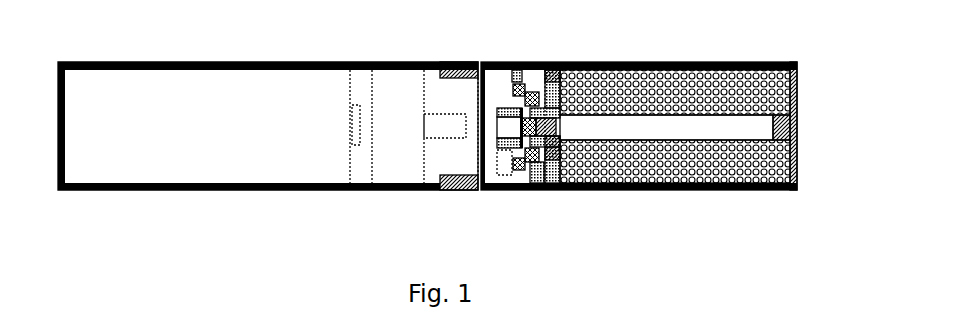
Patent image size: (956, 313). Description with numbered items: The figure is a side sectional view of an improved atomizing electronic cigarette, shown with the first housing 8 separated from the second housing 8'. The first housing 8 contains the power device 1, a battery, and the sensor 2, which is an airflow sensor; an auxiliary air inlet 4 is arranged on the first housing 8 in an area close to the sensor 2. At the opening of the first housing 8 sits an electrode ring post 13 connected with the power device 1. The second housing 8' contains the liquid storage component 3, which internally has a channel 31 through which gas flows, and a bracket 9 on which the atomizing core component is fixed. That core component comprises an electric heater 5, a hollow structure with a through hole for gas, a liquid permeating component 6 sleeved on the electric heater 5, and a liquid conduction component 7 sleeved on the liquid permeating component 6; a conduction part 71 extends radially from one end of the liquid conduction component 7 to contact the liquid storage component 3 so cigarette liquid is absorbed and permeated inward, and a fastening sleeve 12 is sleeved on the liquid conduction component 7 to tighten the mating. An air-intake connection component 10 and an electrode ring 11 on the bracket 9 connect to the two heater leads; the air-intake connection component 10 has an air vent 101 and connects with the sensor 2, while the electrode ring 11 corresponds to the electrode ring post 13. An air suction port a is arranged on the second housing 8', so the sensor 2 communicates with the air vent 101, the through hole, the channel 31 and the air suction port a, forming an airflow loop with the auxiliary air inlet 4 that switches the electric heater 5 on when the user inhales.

The power device 1 is at (284, 106).
The sensor 2 is at (396, 98).
The liquid storage component 3 is at (690, 74).
The air inlet 4 is at (360, 62).
The electric heater 5 is at (560, 128).
The liquid permeating component 6 is at (560, 162).
The liquid conduction component 7 is at (557, 106).
The first housing 8 is at (268, 44).
The second housing 8' is at (639, 100).
The bracket 9 is at (537, 168).
The air-intake connection component 10 is at (505, 106).
The electrode ring 11 is at (516, 80).
The fastening sleeve 12 is at (540, 108).
The electrode ring post 13 is at (446, 190).
The channel 31 is at (648, 126).
The conduction part 71 is at (562, 68).
The air vent 101 is at (503, 160).
The air suction port a is at (783, 128).